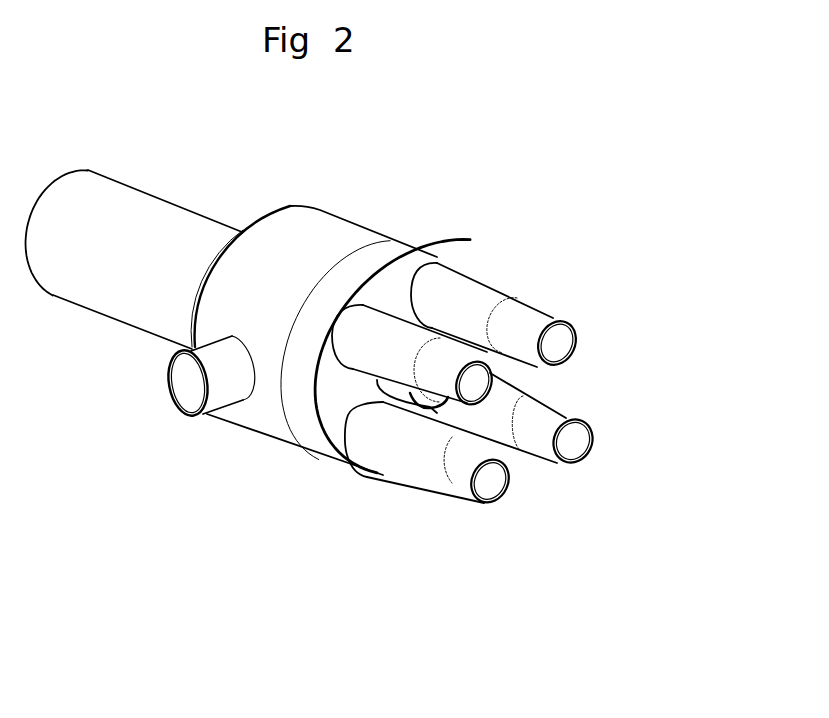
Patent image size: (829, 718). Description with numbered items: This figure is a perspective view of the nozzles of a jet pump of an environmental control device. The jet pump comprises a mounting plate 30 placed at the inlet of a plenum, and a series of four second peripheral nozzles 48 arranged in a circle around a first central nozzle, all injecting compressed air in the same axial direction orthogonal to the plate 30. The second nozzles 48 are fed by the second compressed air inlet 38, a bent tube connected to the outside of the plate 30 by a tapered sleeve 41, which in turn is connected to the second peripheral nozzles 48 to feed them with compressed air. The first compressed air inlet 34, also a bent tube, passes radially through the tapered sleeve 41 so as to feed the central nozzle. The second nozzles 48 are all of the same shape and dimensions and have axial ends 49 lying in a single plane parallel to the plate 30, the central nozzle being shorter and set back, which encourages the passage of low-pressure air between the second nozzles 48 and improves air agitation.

The mounting plate 30 is at (380, 337).
The first compressed air inlet 34 is at (225, 393).
The second compressed air inlet 38 is at (120, 213).
The tapered sleeve 41 is at (277, 227).
The second peripheral nozzles 48 is at (483, 305).
The axial ends 49 is at (455, 470).